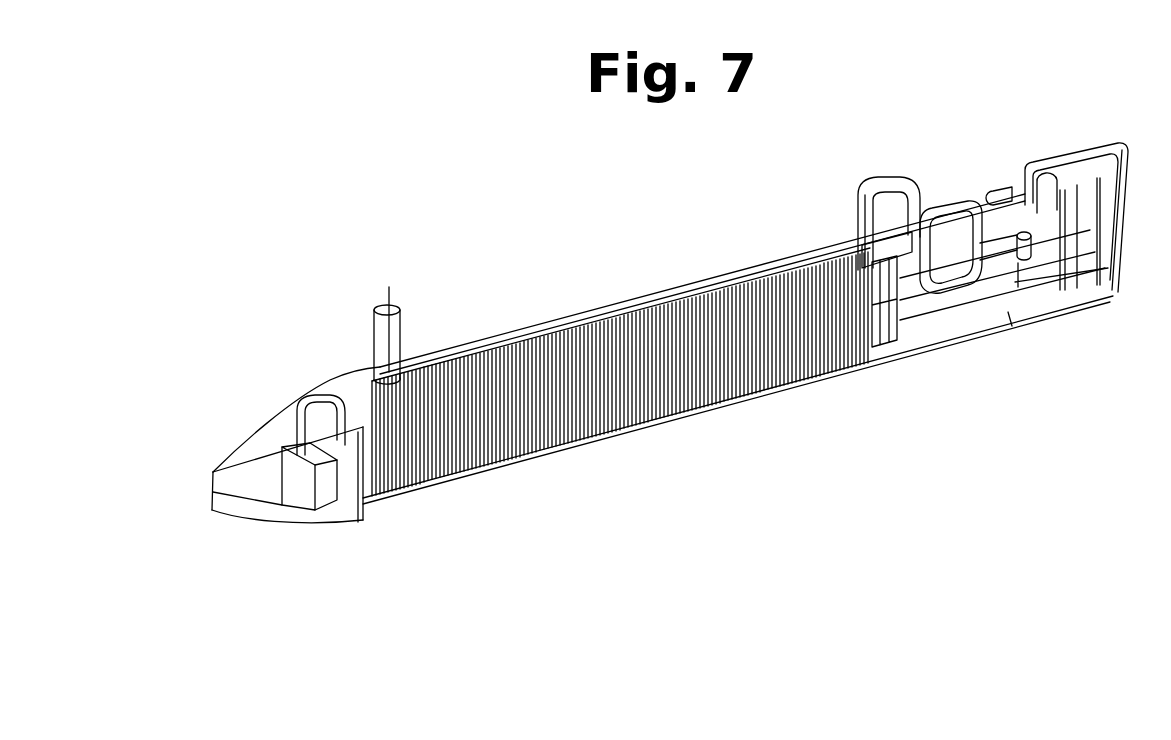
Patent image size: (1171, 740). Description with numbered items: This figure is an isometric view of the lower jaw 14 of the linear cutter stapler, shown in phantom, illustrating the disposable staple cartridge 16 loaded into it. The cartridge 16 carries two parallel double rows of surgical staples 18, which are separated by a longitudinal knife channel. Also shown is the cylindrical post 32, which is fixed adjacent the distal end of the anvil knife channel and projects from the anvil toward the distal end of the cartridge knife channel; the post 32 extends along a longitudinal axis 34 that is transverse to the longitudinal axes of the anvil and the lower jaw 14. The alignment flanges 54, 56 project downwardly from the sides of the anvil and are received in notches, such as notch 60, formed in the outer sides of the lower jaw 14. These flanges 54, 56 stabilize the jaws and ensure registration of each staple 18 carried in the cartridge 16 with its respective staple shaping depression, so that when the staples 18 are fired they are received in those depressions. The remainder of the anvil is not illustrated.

The lower jaw 14 is at (375, 493).
The staple cartridge 16 is at (275, 437).
The surgical staples 18 is at (500, 347).
The cylindrical post 32 is at (400, 333).
The longitudinal axis 34 is at (387, 295).
The alignment flange 54 is at (860, 187).
The alignment flange 56 is at (967, 205).
The notch 60 is at (947, 235).